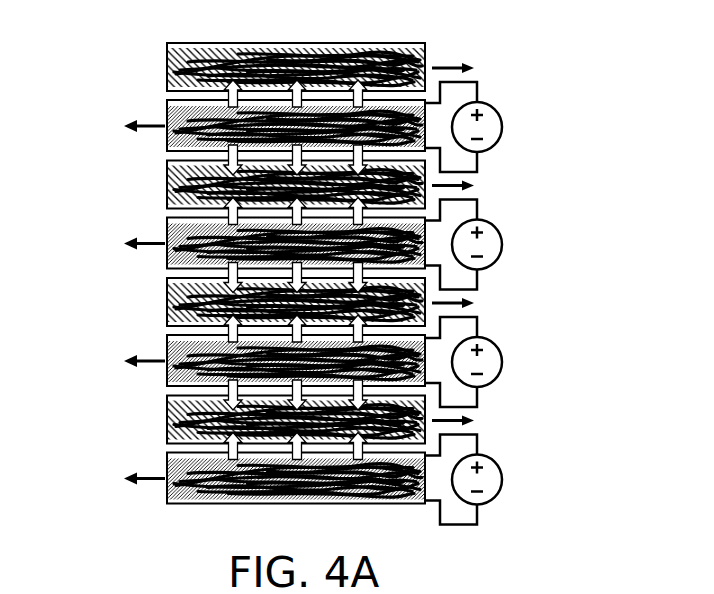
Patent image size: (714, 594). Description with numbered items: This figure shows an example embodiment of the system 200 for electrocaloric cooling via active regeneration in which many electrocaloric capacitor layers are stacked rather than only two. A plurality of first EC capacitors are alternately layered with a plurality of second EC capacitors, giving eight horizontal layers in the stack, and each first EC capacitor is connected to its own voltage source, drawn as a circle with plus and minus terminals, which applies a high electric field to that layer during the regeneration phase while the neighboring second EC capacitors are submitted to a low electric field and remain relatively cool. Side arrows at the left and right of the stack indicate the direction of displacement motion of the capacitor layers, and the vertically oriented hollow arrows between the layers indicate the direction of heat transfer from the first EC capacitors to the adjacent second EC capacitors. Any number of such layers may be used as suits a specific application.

The system for electrocaloric cooling via active regeneration 200 is at (140, 37).